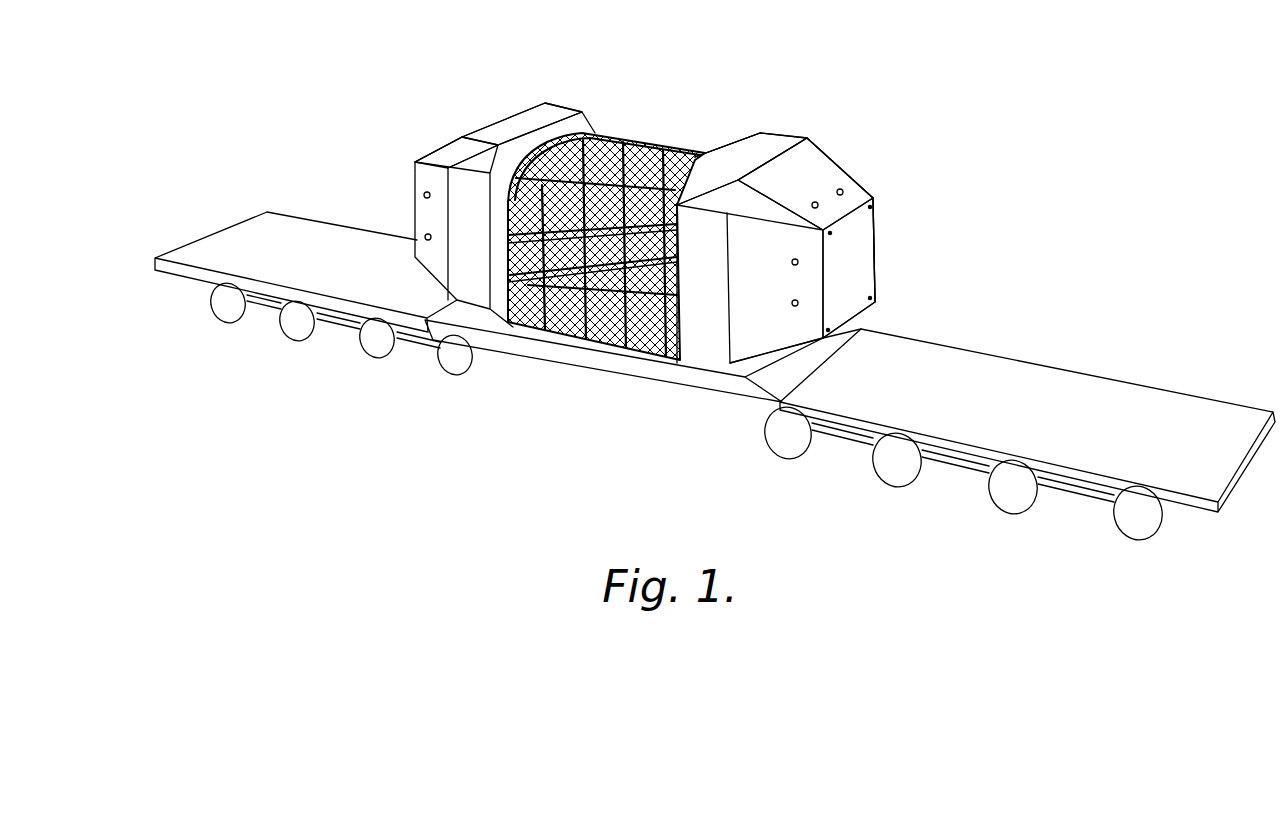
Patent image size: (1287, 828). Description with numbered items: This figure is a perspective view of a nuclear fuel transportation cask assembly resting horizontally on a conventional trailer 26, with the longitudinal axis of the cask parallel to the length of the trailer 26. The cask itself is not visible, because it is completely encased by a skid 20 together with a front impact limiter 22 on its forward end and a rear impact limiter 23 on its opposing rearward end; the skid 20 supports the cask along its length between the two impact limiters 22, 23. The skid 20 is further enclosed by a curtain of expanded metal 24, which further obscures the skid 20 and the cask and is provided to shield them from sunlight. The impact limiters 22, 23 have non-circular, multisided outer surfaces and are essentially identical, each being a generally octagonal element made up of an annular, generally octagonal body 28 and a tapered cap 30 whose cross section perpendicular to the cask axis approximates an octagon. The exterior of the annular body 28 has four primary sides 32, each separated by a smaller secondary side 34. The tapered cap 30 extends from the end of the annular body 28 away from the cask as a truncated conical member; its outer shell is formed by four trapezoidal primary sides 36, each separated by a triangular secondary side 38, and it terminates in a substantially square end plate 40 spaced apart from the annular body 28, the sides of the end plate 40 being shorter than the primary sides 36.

The skid 20 is at (650, 118).
The front impact limiter 22 is at (915, 144).
The rear impact limiter 23 is at (584, 79).
The curtain of expanded metal 24 is at (580, 352).
The trailer 26 is at (1056, 334).
The annular body 28 is at (767, 210).
The tapered cap 30 is at (877, 197).
The primary side 32 is at (503, 123).
The secondary side 34 is at (472, 150).
The primary side 36 is at (418, 205).
The secondary side 38 is at (438, 156).
The end plate 40 is at (862, 287).